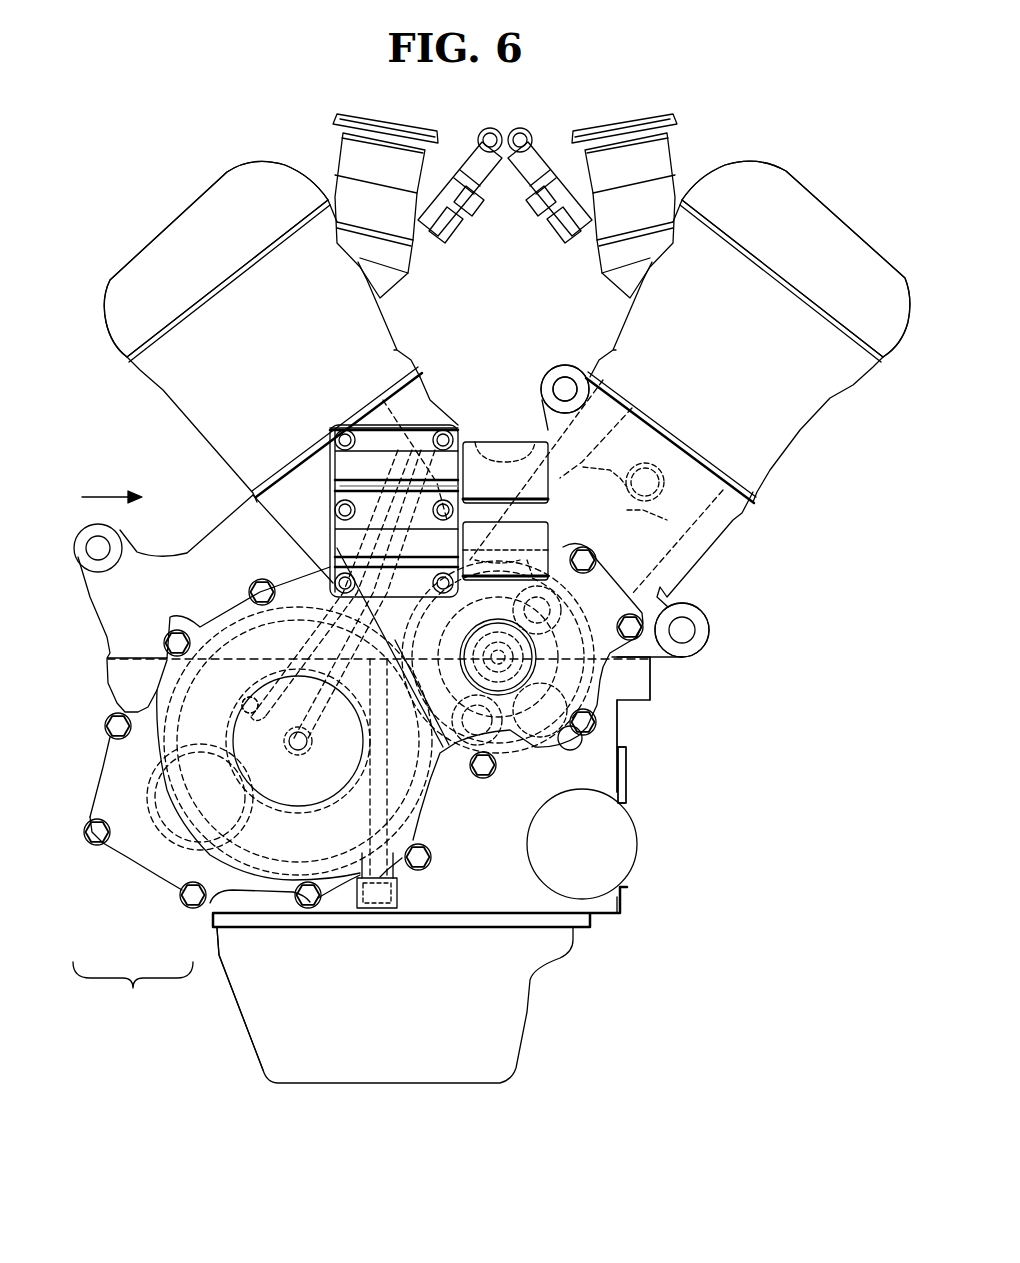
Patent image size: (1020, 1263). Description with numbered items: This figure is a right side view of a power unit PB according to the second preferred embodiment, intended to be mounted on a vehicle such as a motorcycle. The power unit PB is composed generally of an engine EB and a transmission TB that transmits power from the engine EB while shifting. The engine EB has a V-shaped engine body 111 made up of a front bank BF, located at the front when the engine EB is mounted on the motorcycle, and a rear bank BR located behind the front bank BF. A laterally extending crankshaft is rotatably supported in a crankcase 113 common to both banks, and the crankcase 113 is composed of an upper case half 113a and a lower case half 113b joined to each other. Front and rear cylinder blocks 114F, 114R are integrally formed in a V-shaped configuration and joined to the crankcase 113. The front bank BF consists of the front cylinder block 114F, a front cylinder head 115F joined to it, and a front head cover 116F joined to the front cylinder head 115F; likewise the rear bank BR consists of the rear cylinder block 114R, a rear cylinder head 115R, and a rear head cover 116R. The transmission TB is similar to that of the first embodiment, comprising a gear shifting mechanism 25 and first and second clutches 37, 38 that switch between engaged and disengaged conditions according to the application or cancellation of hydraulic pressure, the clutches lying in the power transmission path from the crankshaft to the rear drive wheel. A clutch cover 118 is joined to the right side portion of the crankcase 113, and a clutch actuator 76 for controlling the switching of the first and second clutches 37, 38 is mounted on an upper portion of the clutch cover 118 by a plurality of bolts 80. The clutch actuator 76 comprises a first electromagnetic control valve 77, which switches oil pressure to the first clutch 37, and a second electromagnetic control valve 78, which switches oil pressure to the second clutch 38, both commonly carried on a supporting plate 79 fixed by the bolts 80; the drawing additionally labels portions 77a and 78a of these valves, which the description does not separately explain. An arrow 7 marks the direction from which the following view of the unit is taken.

The arrow 7 is at (76, 493).
The gear shifting mechanism 25 is at (218, 738).
The first clutch 37 is at (240, 692).
The second clutch 38 is at (475, 545).
The clutch actuator 76 is at (382, 418).
The first electromagnetic control valve 77 is at (337, 548).
The joint portion of first oil pipe 77a is at (540, 540).
The second electromagnetic control valve 78 is at (350, 473).
The joint portion of second oil pipe 78a is at (498, 448).
The supporting plate 79 is at (362, 432).
The bolts 80 is at (337, 430).
The engine body 111 is at (630, 788).
The crankcase 113 is at (753, 712).
The upper case half 113a is at (633, 650).
The lower case half 113b is at (678, 806).
The rear cylinder block 114R is at (420, 395).
The front cylinder block 114F is at (703, 547).
The rear cylinder head 115R is at (220, 447).
The front cylinder head 115F is at (613, 350).
The rear head cover 116R is at (220, 190).
The front head cover 116F is at (738, 177).
The clutch cover 118 is at (437, 807).
The rear bank BR is at (155, 236).
The front bank BF is at (843, 220).
The engine EB is at (114, 862).
The transmission TB is at (252, 826).
The power unit PB is at (133, 990).